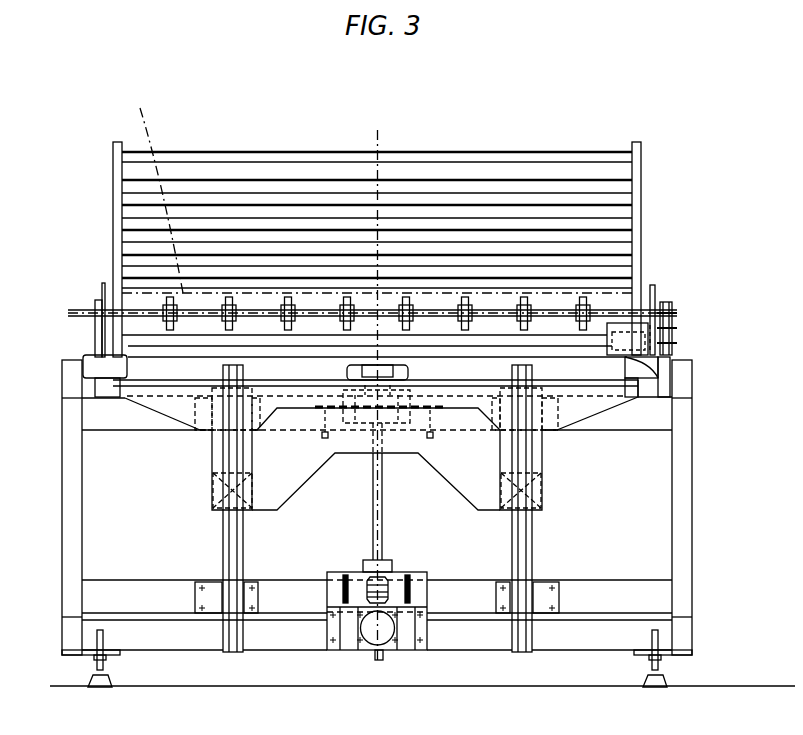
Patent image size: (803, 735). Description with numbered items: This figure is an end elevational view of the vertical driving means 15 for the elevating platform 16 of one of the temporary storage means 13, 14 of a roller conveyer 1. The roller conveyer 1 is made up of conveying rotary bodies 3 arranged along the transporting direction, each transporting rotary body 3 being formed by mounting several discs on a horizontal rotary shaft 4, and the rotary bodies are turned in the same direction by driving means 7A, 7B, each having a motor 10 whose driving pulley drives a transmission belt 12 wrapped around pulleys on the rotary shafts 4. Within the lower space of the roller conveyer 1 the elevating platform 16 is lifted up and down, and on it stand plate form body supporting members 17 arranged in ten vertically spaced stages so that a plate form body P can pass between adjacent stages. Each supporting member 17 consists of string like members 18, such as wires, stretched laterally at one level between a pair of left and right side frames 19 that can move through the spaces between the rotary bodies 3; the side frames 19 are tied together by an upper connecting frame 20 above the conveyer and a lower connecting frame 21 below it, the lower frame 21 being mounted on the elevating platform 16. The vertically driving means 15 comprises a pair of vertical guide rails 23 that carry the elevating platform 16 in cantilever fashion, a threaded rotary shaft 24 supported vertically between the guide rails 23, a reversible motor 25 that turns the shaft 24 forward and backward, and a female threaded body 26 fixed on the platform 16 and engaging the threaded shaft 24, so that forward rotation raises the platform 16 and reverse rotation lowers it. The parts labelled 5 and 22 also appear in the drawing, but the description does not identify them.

The roller conveyer 1 is at (137, 290).
The conveying rotary body 3 is at (594, 298).
The rotary shaft 4 is at (135, 320).
The collar 5 is at (343, 301).
The driving means 7A is at (708, 312).
The driving means 7B is at (708, 312).
The motor 10 is at (621, 340).
The transmission belt 12 is at (668, 328).
The temporary storage means 13 is at (423, 280).
The temporary storage means 14 is at (645, 198).
The vertically driving means 15 is at (156, 452).
The elevating platform 16 is at (285, 468).
The plate form body supporting member 17 is at (350, 246).
The string like member 18 is at (230, 225).
The side frame 19 is at (113, 187).
The upper connecting frame 20 is at (418, 189).
The lower connecting frame 21 is at (428, 343).
The guide column 22 is at (200, 430).
The vertically extending guide rail 23 is at (233, 541).
The threaded rotary shaft 24 is at (383, 514).
The reversible motor 25 is at (378, 647).
The female threaded body 26 is at (410, 390).
The plate form body P is at (155, 188).